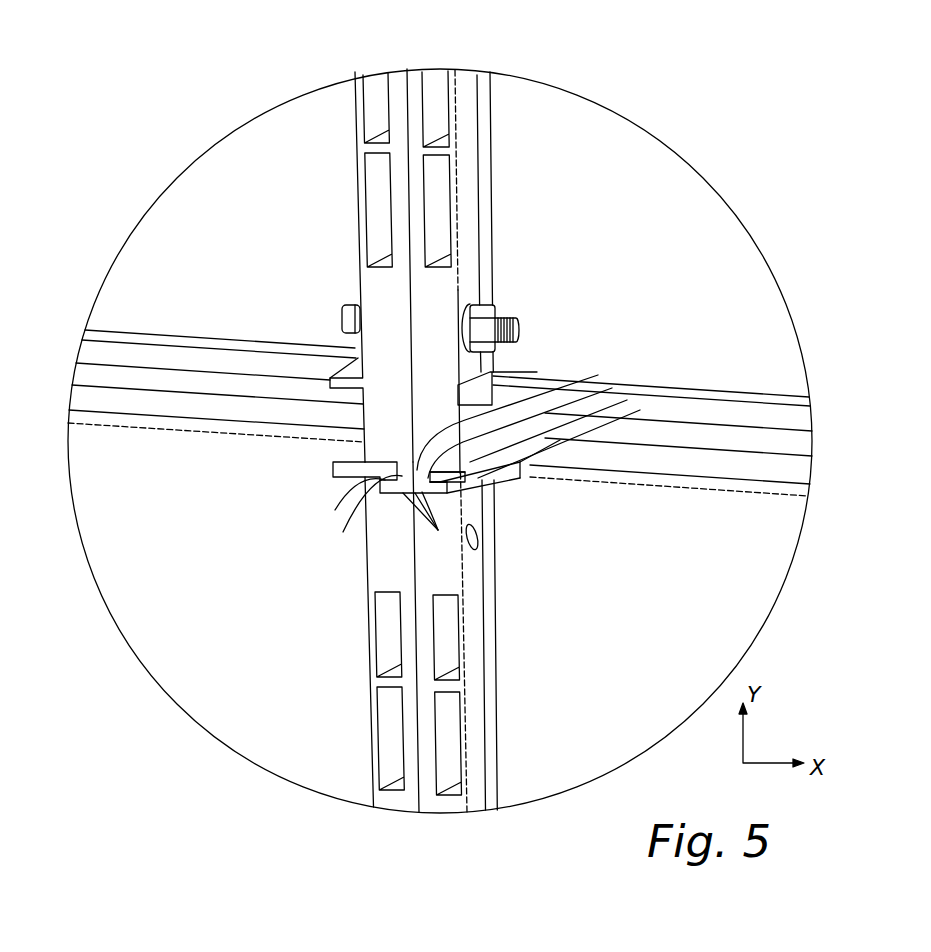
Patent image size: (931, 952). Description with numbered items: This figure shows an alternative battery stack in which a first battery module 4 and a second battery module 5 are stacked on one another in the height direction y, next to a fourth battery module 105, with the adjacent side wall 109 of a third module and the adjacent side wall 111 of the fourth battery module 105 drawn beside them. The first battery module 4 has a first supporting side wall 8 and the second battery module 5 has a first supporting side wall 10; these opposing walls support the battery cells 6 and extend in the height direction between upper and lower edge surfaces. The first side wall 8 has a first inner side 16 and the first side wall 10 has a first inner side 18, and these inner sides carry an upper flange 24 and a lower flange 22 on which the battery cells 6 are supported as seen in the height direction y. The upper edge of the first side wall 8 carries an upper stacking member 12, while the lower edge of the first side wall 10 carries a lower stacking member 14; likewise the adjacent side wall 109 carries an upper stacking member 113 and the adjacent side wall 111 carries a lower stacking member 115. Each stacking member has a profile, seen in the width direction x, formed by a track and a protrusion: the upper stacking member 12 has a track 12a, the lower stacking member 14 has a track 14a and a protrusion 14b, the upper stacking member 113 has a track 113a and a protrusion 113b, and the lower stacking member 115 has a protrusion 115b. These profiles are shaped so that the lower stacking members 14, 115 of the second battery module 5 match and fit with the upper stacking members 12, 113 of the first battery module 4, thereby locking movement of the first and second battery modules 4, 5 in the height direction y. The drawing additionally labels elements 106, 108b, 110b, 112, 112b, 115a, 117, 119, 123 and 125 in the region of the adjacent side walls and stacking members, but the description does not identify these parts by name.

The first battery module 4 is at (250, 700).
The second battery module 5 is at (182, 200).
The battery cells 6 is at (92, 402).
The first supporting side wall 8 is at (341, 462).
The first supporting side wall 10 is at (338, 236).
The upper stacking member 12 is at (517, 606).
The track 12a is at (438, 530).
The lower stacking member 14 is at (293, 551).
The track 14a is at (355, 497).
The protrusion 14b is at (360, 505).
The first inner side 16 is at (367, 668).
The first inner side 18 is at (357, 245).
The lower flange 22 is at (345, 375).
The upper flange 24 is at (335, 462).
The fourth battery module 105 is at (658, 178).
The second horizontal profile 106 is at (780, 442).
The hook portion 108b is at (580, 398).
The adjacent side wall 109 is at (497, 453).
The connecting piece 110b is at (420, 505).
The adjacent side wall 111 is at (487, 408).
The fastening element 112 is at (534, 548).
The fastening element portion 112b is at (455, 520).
The upper stacking member 113 is at (573, 480).
The track 113a is at (488, 497).
The protrusion 113b is at (535, 385).
The lower stacking member 115 is at (558, 502).
The first spring tab 115a is at (540, 480).
The protrusion 115b is at (497, 487).
The lower section of second profile 117 is at (472, 708).
The upper section of second profile 119 is at (467, 153).
The bolt 123 is at (497, 358).
The tab 125 is at (617, 403).